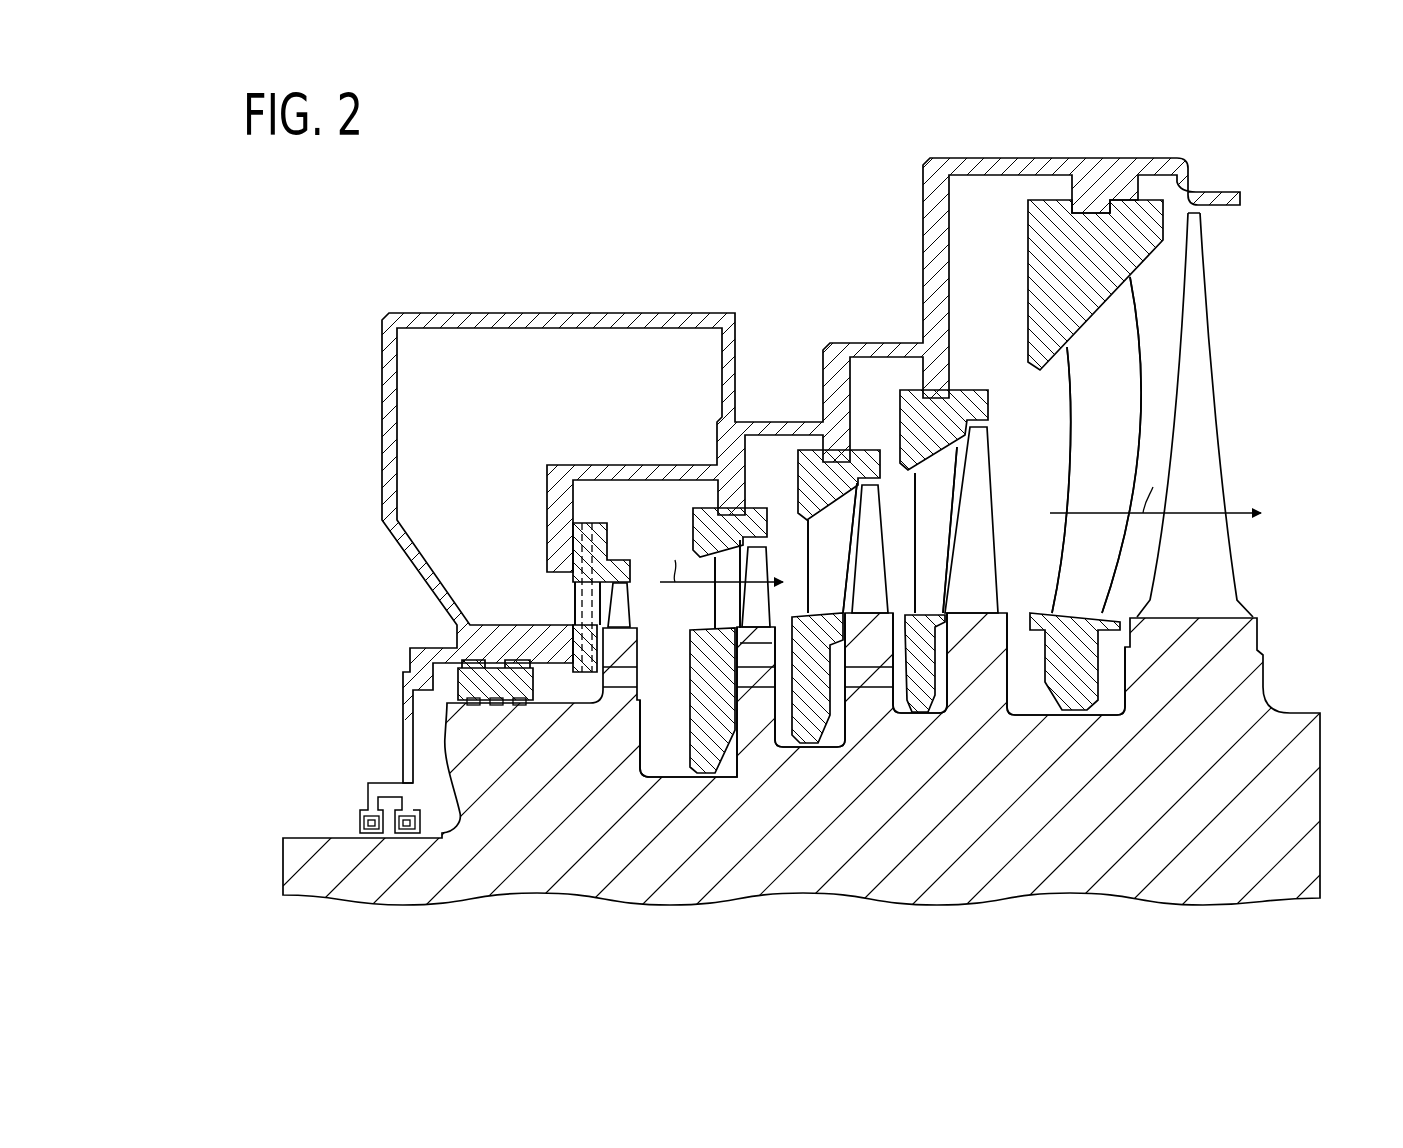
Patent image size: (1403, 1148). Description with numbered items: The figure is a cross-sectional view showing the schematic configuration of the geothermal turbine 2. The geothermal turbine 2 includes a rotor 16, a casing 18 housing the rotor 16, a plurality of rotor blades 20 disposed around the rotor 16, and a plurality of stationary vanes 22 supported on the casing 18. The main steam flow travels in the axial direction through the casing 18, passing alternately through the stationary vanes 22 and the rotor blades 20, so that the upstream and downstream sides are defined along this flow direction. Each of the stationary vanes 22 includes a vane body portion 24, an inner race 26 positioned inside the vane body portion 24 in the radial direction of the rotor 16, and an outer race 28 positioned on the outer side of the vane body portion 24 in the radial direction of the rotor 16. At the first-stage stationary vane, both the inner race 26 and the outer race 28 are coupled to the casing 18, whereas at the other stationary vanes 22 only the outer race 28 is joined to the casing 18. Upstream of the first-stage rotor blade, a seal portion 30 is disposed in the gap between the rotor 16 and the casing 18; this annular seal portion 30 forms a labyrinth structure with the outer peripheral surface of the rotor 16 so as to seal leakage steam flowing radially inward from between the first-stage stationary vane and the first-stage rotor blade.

The geothermal turbine 2 is at (831, 177).
The rotor 16 is at (1263, 668).
The casing 18 is at (555, 313).
The rotor blades 20 is at (1222, 428).
The stationary vanes 22 is at (1137, 305).
The vane body portion 24 is at (1142, 357).
The inner race 26 is at (570, 707).
The outer race 28 is at (607, 538).
The seal portion 30 is at (535, 705).